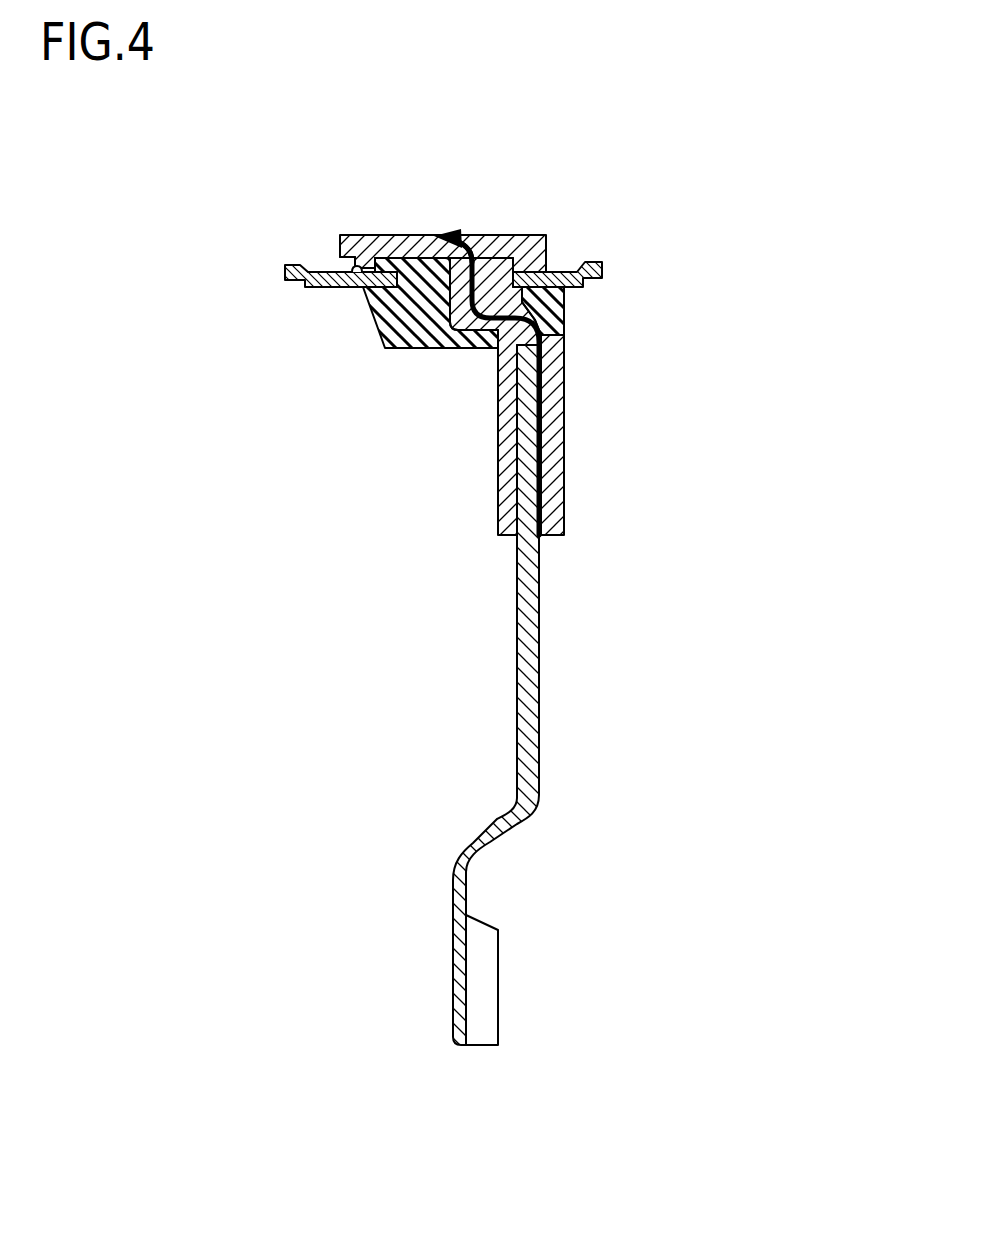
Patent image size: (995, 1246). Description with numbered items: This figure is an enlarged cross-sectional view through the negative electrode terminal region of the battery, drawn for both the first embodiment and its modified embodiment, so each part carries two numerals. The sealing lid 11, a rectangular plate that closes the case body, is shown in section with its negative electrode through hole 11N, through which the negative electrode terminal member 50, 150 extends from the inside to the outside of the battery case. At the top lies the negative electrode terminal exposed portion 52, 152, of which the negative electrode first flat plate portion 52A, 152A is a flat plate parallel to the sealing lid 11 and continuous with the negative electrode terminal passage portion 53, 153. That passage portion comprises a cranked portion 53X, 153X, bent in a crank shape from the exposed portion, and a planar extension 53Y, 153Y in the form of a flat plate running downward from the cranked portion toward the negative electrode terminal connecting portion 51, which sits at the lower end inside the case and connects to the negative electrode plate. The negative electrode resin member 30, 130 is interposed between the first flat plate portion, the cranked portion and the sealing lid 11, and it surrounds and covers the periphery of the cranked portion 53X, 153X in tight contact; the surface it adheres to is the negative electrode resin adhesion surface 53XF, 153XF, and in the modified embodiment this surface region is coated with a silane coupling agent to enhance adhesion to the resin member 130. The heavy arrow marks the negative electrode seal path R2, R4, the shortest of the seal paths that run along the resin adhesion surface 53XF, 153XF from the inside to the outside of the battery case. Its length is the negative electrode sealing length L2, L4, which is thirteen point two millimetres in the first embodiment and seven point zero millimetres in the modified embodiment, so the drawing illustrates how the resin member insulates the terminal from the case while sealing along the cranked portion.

The negative electrode first flat plate portion 52A is at (374, 196).
The negative electrode first flat plate portion 152A is at (374, 196).
The negative electrode terminal exposed portion 52 is at (374, 196).
The negative electrode terminal exposed portion 152 is at (447, 190).
The negative electrode terminal member 50 is at (405, 198).
The negative electrode terminal member 150 is at (405, 198).
The negative electrode seal path R2 is at (516, 228).
The negative electrode seal path R4 is at (474, 262).
The negative electrode resin member 30 is at (471, 293).
The negative electrode resin member 130 is at (547, 237).
The sealing lid 11 is at (462, 275).
The negative electrode through hole 11N is at (372, 289).
The negative electrode sealing length L2 is at (552, 365).
The negative electrode sealing length L4 is at (552, 365).
The negative electrode resin adhesion surface 53XF is at (506, 420).
The negative electrode resin adhesion surface 153XF is at (462, 330).
The negative electrode terminal passage portion 53 is at (496, 651).
The negative electrode terminal passage portion 153 is at (496, 651).
The cranked portion 53X is at (441, 396).
The cranked portion 153X is at (512, 396).
The planar extension 53Y is at (440, 695).
The second seal layer 153Y is at (517, 565).
The negative electrode terminal connecting portion 51 is at (456, 960).